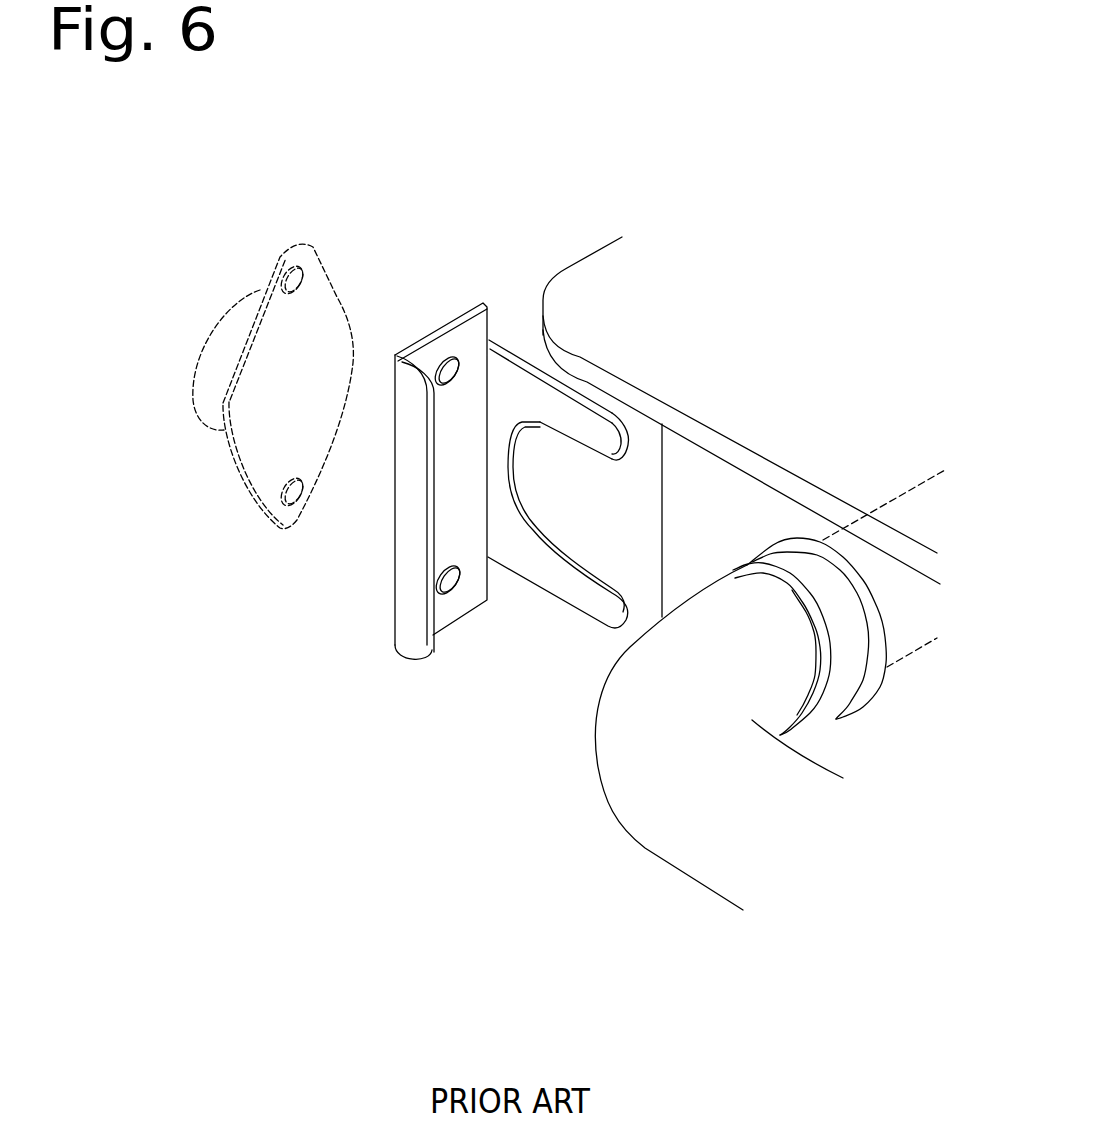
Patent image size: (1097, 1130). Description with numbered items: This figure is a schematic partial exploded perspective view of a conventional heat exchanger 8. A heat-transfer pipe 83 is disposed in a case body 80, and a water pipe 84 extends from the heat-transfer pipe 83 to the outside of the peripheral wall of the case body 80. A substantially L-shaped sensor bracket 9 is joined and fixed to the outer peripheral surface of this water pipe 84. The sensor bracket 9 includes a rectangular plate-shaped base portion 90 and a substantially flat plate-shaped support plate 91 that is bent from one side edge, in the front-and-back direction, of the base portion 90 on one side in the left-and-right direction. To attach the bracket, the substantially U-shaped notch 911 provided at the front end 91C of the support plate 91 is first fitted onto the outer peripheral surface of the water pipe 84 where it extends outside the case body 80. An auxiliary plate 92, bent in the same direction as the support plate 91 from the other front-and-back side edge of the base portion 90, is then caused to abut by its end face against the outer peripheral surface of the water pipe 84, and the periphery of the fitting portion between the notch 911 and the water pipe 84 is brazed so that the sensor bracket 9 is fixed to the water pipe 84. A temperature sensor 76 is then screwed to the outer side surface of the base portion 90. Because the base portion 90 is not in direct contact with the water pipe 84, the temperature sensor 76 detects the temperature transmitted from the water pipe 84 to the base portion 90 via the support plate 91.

The heat exchanger 8 is at (530, 236).
The case body 80 is at (687, 523).
The sensor bracket 9 is at (373, 609).
The base portion 90 is at (420, 332).
The auxiliary plate 92 is at (413, 643).
The support plate 91 is at (515, 383).
The front end 91C is at (631, 443).
The notch 911 is at (596, 530).
The heat-transfer pipe 83 is at (915, 507).
The water pipe 84 is at (620, 778).
The temperature sensor 76 is at (203, 401).